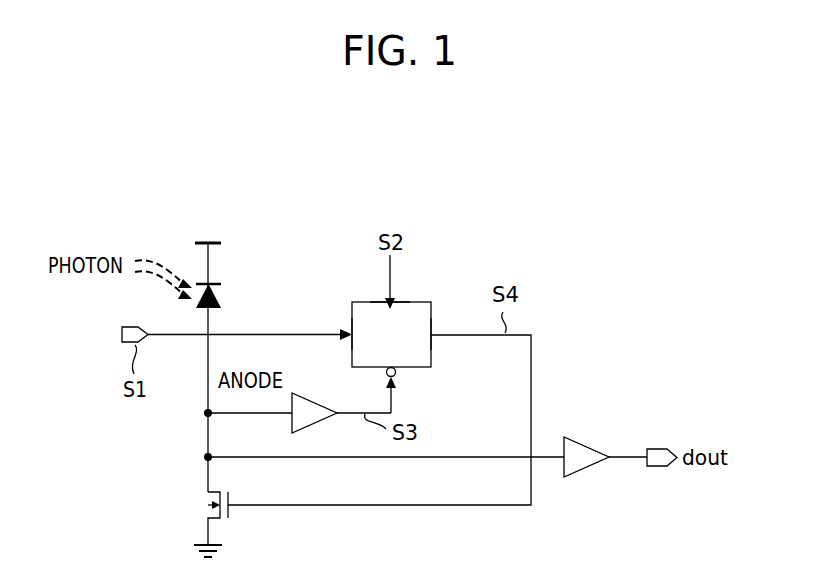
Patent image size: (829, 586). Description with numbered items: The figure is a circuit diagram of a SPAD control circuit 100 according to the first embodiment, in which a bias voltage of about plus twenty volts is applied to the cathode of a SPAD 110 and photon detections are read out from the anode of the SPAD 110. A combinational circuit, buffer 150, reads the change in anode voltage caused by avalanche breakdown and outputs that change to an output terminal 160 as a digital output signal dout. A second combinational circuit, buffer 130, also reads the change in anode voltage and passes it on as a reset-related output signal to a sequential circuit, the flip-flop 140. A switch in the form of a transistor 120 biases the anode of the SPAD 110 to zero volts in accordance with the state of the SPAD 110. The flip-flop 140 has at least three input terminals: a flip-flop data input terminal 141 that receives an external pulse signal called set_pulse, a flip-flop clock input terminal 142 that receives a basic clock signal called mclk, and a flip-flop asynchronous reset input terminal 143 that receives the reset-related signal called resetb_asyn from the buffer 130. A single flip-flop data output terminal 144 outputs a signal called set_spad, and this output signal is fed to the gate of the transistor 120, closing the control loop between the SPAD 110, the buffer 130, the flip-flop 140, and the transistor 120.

The SPAD control circuit 100 is at (686, 218).
The SPAD 110 is at (224, 296).
The transistor 120 is at (204, 511).
The buffer 130 is at (324, 381).
The flip-flop 140 is at (408, 300).
The flip-flop data input terminal 141 is at (349, 330).
The flip-flop clock input terminal 142 is at (386, 300).
The flip-flop asynchronous reset input terminal 143 is at (396, 376).
The flip-flop data output terminal 144 is at (432, 330).
The buffer 150 is at (584, 443).
The output terminal 160 is at (658, 448).